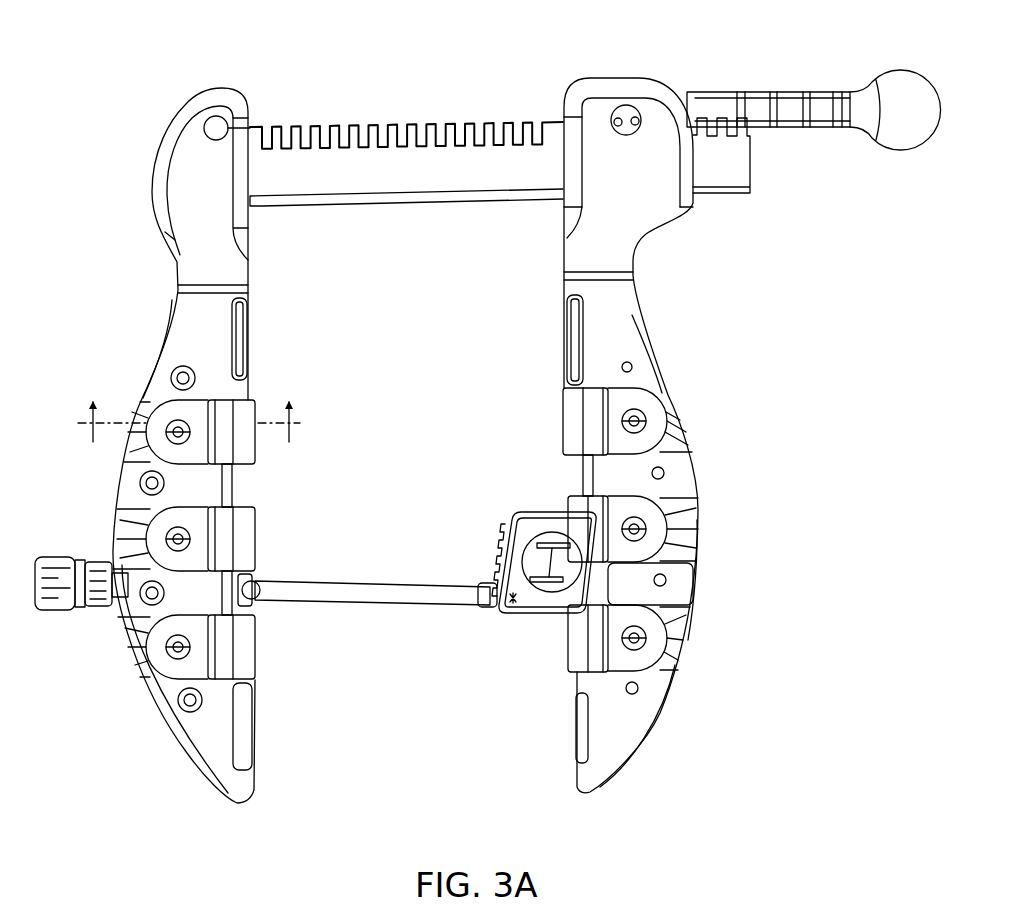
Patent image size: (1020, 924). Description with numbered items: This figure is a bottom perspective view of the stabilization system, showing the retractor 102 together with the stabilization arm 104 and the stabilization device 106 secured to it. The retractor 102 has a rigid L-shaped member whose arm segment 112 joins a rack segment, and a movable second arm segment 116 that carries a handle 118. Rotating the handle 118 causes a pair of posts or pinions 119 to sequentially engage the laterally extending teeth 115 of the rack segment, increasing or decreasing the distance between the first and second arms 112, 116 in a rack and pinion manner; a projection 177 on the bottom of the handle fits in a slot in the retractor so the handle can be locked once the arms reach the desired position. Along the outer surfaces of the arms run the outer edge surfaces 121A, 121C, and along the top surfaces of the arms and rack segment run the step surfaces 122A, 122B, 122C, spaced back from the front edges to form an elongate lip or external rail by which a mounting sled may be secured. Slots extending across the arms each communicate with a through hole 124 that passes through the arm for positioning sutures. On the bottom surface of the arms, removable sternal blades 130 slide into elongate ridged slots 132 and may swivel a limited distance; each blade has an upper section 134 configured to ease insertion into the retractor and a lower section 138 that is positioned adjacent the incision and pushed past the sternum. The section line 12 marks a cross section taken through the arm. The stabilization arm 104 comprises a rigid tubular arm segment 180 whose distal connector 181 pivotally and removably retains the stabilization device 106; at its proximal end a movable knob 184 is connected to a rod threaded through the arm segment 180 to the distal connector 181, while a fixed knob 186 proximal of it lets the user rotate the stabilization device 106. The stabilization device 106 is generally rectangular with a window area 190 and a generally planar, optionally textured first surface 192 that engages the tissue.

The retractor 102 is at (406, 160).
The stabilization arm 104 is at (417, 576).
The stabilization device 106 is at (528, 576).
The arm segment 112 is at (200, 755).
The teeth 115 is at (368, 125).
The second arm segment 116 is at (628, 732).
The handle 118 is at (855, 122).
The posts or pinions 119 is at (623, 106).
The outer edge surface 121A is at (700, 588).
The outer edge surface 121C is at (162, 350).
The step surface 122A is at (578, 735).
The step surface 122B is at (336, 200).
The step surface 122C is at (248, 358).
The through hole 124 is at (632, 366).
The sternal blades 130 is at (566, 412).
The ridged slots 132 is at (700, 532).
The upper section 134 is at (650, 410).
The lower sections 138 is at (572, 398).
The section line 12 is at (187, 440).
The projection 177 is at (686, 95).
The arm segment 180 is at (348, 578).
The distal connector 181 is at (480, 603).
The movable knob 184 is at (42, 612).
The fixed knob 186 is at (103, 560).
The window area 190 is at (528, 531).
The first surface 192 is at (537, 522).